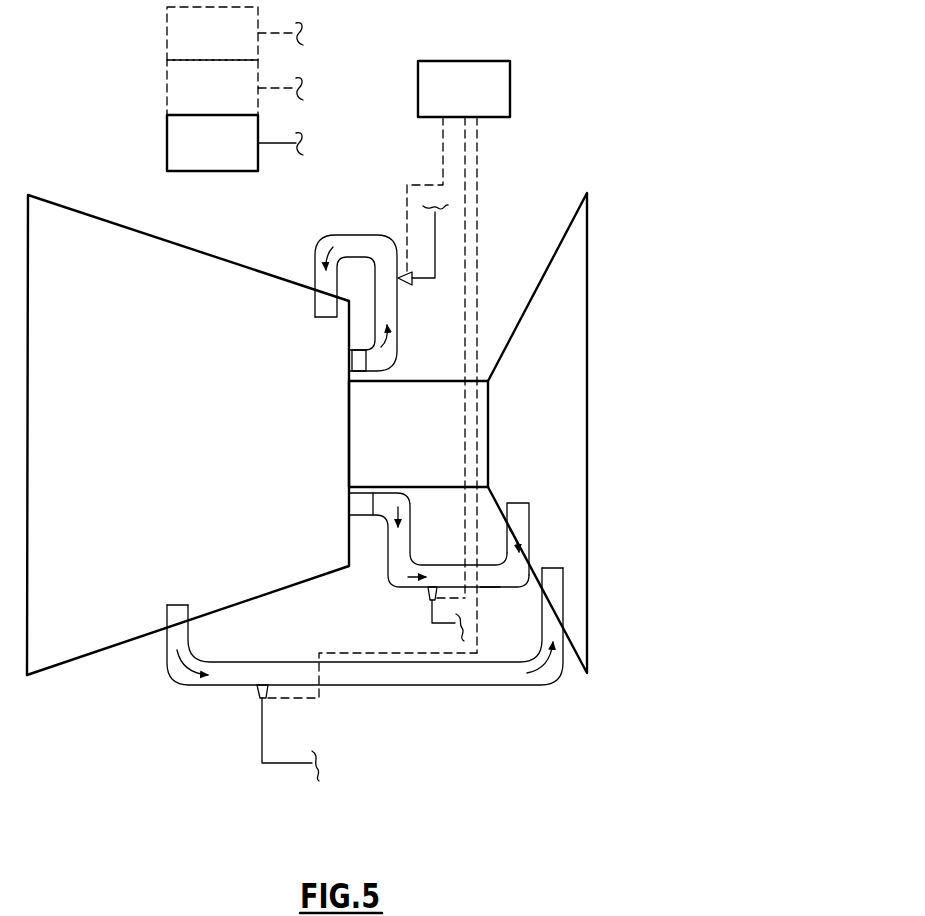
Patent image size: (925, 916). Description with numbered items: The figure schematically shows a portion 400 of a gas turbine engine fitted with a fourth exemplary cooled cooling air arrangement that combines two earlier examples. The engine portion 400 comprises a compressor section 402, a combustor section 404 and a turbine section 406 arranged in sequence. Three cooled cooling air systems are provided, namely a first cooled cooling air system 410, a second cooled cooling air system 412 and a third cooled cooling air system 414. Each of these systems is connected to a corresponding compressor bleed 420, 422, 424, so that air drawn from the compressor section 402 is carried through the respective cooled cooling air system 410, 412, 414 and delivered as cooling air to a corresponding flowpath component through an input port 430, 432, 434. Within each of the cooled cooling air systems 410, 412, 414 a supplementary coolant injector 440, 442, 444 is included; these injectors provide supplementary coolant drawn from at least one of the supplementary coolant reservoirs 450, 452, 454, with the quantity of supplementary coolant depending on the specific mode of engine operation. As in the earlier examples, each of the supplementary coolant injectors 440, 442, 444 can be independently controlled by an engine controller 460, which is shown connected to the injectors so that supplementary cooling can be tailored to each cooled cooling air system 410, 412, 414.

The portion of the gas turbine engine 400 is at (547, 162).
The compressor section 402 is at (206, 446).
The combustor section 404 is at (437, 444).
The turbine section 406 is at (557, 444).
The first cooled cooling air system 410 is at (357, 235).
The second cooled cooling air system 412 is at (397, 686).
The third cooled cooling air system 414 is at (487, 590).
The compressor bleed 420 is at (351, 362).
The compressor bleed 422 is at (172, 615).
The compressor bleed 424 is at (352, 503).
The input port 430 is at (320, 305).
The input port 432 is at (557, 585).
The input port 434 is at (520, 518).
The supplementary coolant injector 440 is at (405, 288).
The supplementary coolant injector 442 is at (252, 693).
The supplementary coolant injector 444 is at (427, 596).
The supplementary coolant reservoir 450 is at (234, 156).
The supplementary coolant reservoir 452 is at (234, 102).
The supplementary coolant reservoir 454 is at (234, 47).
The engine controller 460 is at (484, 101).